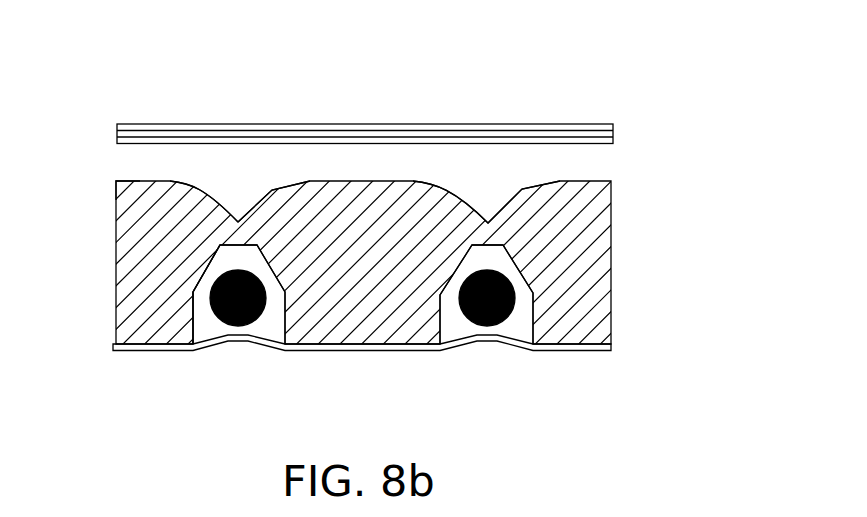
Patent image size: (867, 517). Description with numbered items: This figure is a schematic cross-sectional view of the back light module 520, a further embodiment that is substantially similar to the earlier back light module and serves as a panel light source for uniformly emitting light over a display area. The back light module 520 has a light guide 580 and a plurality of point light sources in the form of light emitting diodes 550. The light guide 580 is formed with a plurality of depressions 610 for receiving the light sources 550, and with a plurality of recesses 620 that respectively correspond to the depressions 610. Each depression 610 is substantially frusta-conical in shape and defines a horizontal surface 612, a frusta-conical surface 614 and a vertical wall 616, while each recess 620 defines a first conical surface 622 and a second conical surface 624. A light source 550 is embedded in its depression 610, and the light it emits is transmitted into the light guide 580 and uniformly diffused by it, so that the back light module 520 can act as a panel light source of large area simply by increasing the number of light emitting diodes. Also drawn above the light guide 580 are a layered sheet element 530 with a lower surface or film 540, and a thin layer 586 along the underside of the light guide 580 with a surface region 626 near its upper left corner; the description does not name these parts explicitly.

The back light module 520 is at (65, 83).
The cover plate 530 is at (613, 138).
The cover plate lower surface 540 is at (615, 143).
The light guide 580 is at (607, 248).
The recess 620 is at (485, 201).
The first conical surface 622 is at (238, 220).
The second conical surface 624 is at (189, 186).
The block upper surface 626 is at (131, 181).
The horizontal surface 612 is at (226, 260).
The frusta-conical surface 614 is at (206, 290).
The vertical wall 616 is at (199, 327).
The depression 610 is at (456, 336).
The light emitting diode 550 is at (500, 324).
The bottom layer 586 is at (363, 352).